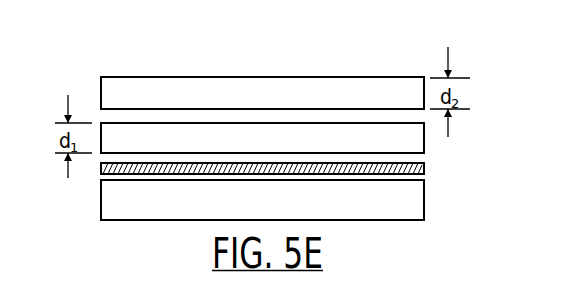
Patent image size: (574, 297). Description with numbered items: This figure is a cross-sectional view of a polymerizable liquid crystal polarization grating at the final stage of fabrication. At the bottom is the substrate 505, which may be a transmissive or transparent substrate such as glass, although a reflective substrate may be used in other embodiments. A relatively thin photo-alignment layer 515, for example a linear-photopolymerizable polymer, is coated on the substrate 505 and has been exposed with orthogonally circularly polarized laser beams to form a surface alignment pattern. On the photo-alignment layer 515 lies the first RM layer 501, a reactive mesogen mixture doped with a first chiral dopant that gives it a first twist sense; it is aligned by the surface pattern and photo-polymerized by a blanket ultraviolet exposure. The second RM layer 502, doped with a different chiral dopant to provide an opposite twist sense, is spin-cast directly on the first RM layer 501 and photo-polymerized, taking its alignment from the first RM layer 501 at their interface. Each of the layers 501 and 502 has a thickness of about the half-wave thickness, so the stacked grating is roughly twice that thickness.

The second RM layer 502 is at (279, 106).
The first RM layer 501 is at (279, 150).
The photo-alignment layer 515 is at (101, 168).
The substrate 505 is at (424, 193).